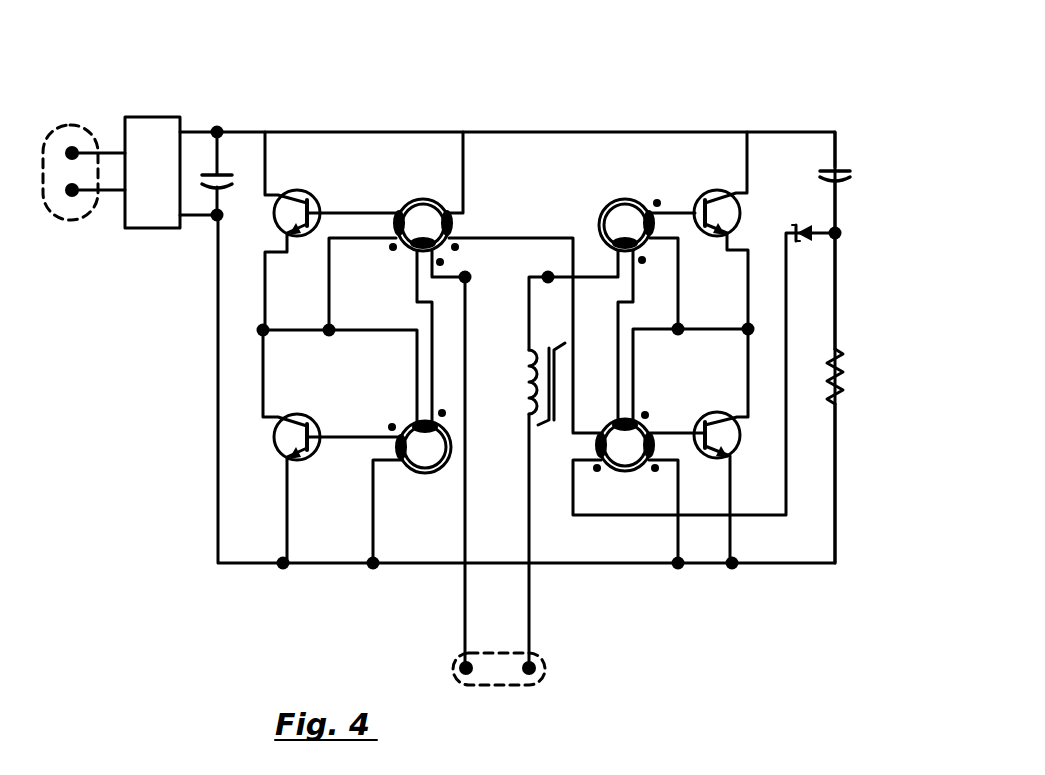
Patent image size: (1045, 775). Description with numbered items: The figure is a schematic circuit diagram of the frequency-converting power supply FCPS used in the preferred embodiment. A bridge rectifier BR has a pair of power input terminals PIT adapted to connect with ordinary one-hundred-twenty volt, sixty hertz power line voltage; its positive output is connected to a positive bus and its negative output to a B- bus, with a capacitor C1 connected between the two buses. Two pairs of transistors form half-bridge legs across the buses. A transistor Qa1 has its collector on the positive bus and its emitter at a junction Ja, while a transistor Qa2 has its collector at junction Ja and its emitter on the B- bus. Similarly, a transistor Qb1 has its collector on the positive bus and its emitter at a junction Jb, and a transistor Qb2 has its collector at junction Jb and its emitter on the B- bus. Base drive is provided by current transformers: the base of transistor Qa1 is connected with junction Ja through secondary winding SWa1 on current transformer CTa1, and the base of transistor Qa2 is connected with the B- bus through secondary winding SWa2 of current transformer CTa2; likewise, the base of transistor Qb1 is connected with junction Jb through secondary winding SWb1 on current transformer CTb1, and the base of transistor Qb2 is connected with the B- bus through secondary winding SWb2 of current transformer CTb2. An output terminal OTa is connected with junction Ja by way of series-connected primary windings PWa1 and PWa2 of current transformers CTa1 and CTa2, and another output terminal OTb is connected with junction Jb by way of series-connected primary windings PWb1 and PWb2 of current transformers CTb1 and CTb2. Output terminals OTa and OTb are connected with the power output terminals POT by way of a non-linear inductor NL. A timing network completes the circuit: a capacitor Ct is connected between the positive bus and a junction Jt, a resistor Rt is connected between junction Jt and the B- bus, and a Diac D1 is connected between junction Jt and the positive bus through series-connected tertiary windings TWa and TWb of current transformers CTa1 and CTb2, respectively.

The power input terminals PIT is at (67, 222).
The bridge rectifier BR is at (178, 189).
The B− bus B- is at (202, 222).
The capacitor C1 is at (228, 168).
The transistor Qa1 is at (305, 192).
The transistor Qa2 is at (300, 455).
The transistor Qb1 is at (741, 210).
The transistor Qb2 is at (738, 452).
The current transformer CTa1 is at (409, 182).
The current transformer CTa2 is at (421, 482).
The current transformer CTb1 is at (638, 184).
The current transformer CTb2 is at (632, 485).
The secondary winding SWa1 is at (394, 232).
The secondary winding SWa2 is at (394, 452).
The secondary winding SWb1 is at (663, 222).
The secondary winding SWb2 is at (662, 447).
The primary winding PWa1 is at (421, 257).
The primary winding PWa2 is at (424, 420).
The primary winding PWb1 is at (623, 238).
The primary winding PWb2 is at (631, 418).
The tertiary winding TWa is at (458, 224).
The tertiary winding TWb is at (597, 444).
The output terminal OTa is at (468, 272).
The output terminal OTb is at (543, 275).
The junction Ja is at (267, 326).
The junction Jb is at (744, 335).
The junction Jt is at (840, 236).
The non-linear inductor NL is at (526, 377).
The capacitor Ct is at (845, 174).
The Diac D1 is at (808, 221).
The resistor Rt is at (843, 386).
The power output terminals POT is at (547, 675).
The frequency-converting power supply FCPS is at (205, 540).